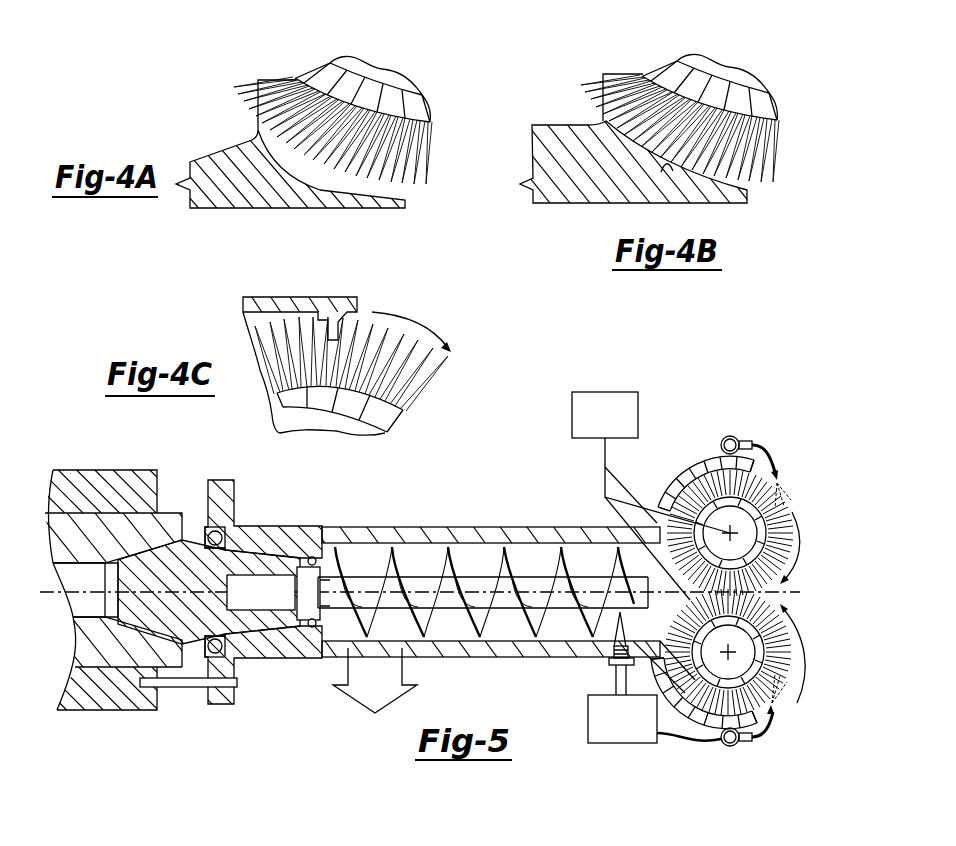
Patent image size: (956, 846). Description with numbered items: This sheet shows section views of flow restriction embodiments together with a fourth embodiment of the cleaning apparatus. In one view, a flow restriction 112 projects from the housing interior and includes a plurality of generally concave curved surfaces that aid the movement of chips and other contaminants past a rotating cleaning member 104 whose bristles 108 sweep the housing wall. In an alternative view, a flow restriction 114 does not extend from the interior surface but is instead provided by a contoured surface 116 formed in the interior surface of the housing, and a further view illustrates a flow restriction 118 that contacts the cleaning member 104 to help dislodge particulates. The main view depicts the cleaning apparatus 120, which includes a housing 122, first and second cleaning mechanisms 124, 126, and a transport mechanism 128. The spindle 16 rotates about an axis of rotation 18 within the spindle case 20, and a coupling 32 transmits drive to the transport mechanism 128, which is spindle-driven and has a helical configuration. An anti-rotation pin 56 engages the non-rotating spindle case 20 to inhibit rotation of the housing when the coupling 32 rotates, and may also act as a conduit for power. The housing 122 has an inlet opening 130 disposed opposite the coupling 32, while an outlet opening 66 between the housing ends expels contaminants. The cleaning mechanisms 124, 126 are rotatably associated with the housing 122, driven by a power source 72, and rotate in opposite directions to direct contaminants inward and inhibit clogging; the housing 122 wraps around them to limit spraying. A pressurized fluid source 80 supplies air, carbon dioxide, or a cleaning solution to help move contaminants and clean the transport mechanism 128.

In FIG. 5, the spindle 16 is at (78, 520).
In FIG. 5, the axis of rotation 18 is at (265, 588).
In FIG. 5, the spindle case 20 is at (123, 712).
In FIG. 5, the coupling 32 is at (207, 505).
In FIG. 5, the anti-rotation pin 56 is at (184, 688).
In FIG. 5, the outlet opening 66 is at (375, 680).
In FIG. 5, the power source 72 is at (572, 410).
In FIG. 5, the pressurized fluid source 80 is at (588, 712).
In FIG. 4A, the brush 104 is at (377, 67).
In FIG. 4B, the brush 104 is at (731, 58).
In FIG. 4C, the brush 104 is at (335, 438).
In FIG. 4A, the bristles 108 is at (407, 195).
In FIG. 4B, the bristles 108 is at (758, 193).
In FIG. 4A, the flow restriction 112 is at (255, 122).
In FIG. 4B, the flow restriction 114 is at (600, 122).
In FIG. 4B, the contoured surface 116 is at (666, 172).
In FIG. 4C, the slot 118 is at (333, 328).
In FIG. 5, the cleaning apparatus 120 is at (689, 443).
In FIG. 5, the housing 122 is at (439, 527).
In FIG. 5, the first cleaning mechanism 124 is at (782, 476).
In FIG. 5, the second cleaning mechanism 126 is at (775, 708).
In FIG. 5, the transport mechanism 128 is at (567, 558).
In FIG. 5, the inlet opening 130 is at (786, 578).